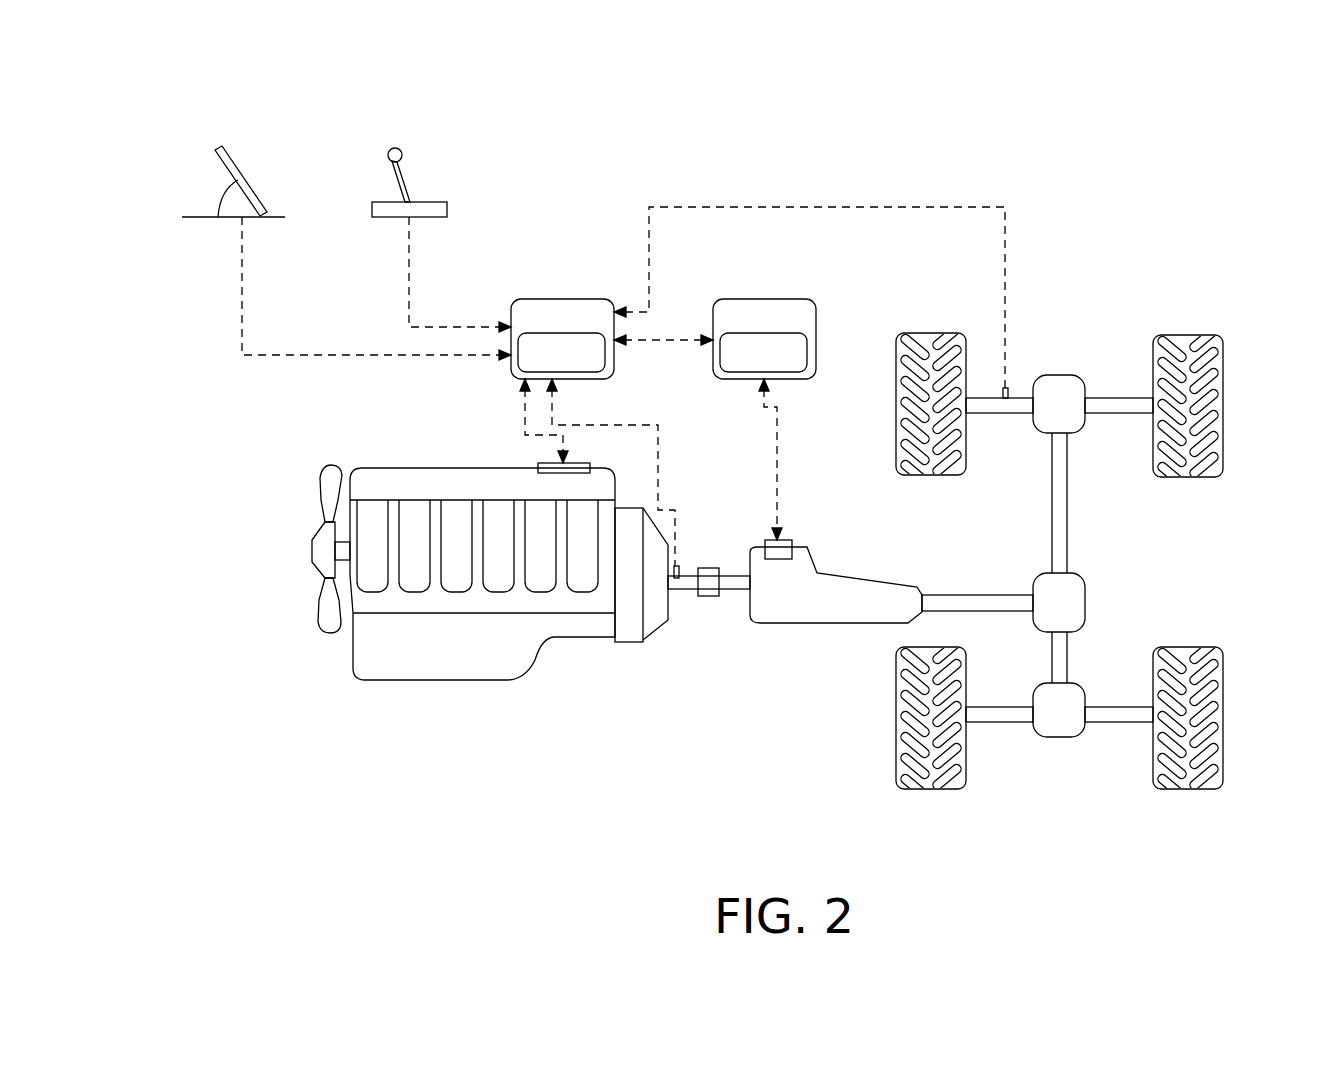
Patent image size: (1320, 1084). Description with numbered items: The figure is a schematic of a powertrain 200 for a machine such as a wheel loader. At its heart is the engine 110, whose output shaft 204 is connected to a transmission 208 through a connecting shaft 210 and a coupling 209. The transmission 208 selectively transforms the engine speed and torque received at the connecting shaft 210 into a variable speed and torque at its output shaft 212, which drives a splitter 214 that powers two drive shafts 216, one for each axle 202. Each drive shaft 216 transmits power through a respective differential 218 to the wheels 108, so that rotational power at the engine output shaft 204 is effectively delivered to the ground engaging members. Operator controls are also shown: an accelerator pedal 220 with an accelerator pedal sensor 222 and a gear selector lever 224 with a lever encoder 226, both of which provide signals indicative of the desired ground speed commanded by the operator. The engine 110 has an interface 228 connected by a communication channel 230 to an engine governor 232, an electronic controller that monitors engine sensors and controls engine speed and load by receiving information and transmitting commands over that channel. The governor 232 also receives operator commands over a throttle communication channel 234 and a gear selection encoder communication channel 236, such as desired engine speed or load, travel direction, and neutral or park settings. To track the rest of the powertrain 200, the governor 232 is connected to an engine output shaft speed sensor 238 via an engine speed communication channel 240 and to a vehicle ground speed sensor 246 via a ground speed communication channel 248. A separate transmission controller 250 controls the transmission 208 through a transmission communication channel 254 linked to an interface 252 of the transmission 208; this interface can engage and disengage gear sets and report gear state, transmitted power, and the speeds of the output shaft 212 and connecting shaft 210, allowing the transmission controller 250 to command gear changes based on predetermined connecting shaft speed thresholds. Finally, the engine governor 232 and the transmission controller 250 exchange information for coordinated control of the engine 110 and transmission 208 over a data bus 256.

The powertrain 200 is at (770, 149).
The engine 110 is at (377, 482).
The engine output shaft speed sensor 238 is at (670, 573).
The interface 228 is at (543, 468).
The output shaft 204 is at (673, 590).
The connecting shaft 210 is at (740, 589).
The coupling 209 is at (712, 580).
The transmission 208 is at (850, 590).
The interface 252 is at (787, 547).
The output shaft 212 is at (940, 602).
The splitter 214 is at (1062, 602).
The drive shafts 216 is at (1062, 505).
The differential 218 is at (1052, 388).
The axle 202 is at (1108, 403).
The wheels 108 is at (930, 333).
The vehicle ground speed sensor 246 is at (1000, 395).
The ground speed communication channel 248 is at (855, 207).
The engine governor 232 is at (550, 308).
The transmission controller 250 is at (793, 322).
The data bus 256 is at (647, 342).
The transmission communication channel 254 is at (778, 435).
The communication channel 230 is at (525, 412).
The engine speed communication channel 240 is at (658, 482).
The accelerator pedal 220 is at (228, 153).
The accelerator pedal sensor 222 is at (218, 203).
The throttle communication channel 234 is at (240, 280).
The gear selector lever 224 is at (395, 148).
The lever encoder 226 is at (428, 218).
The gear selection encoder communication channel 236 is at (408, 258).